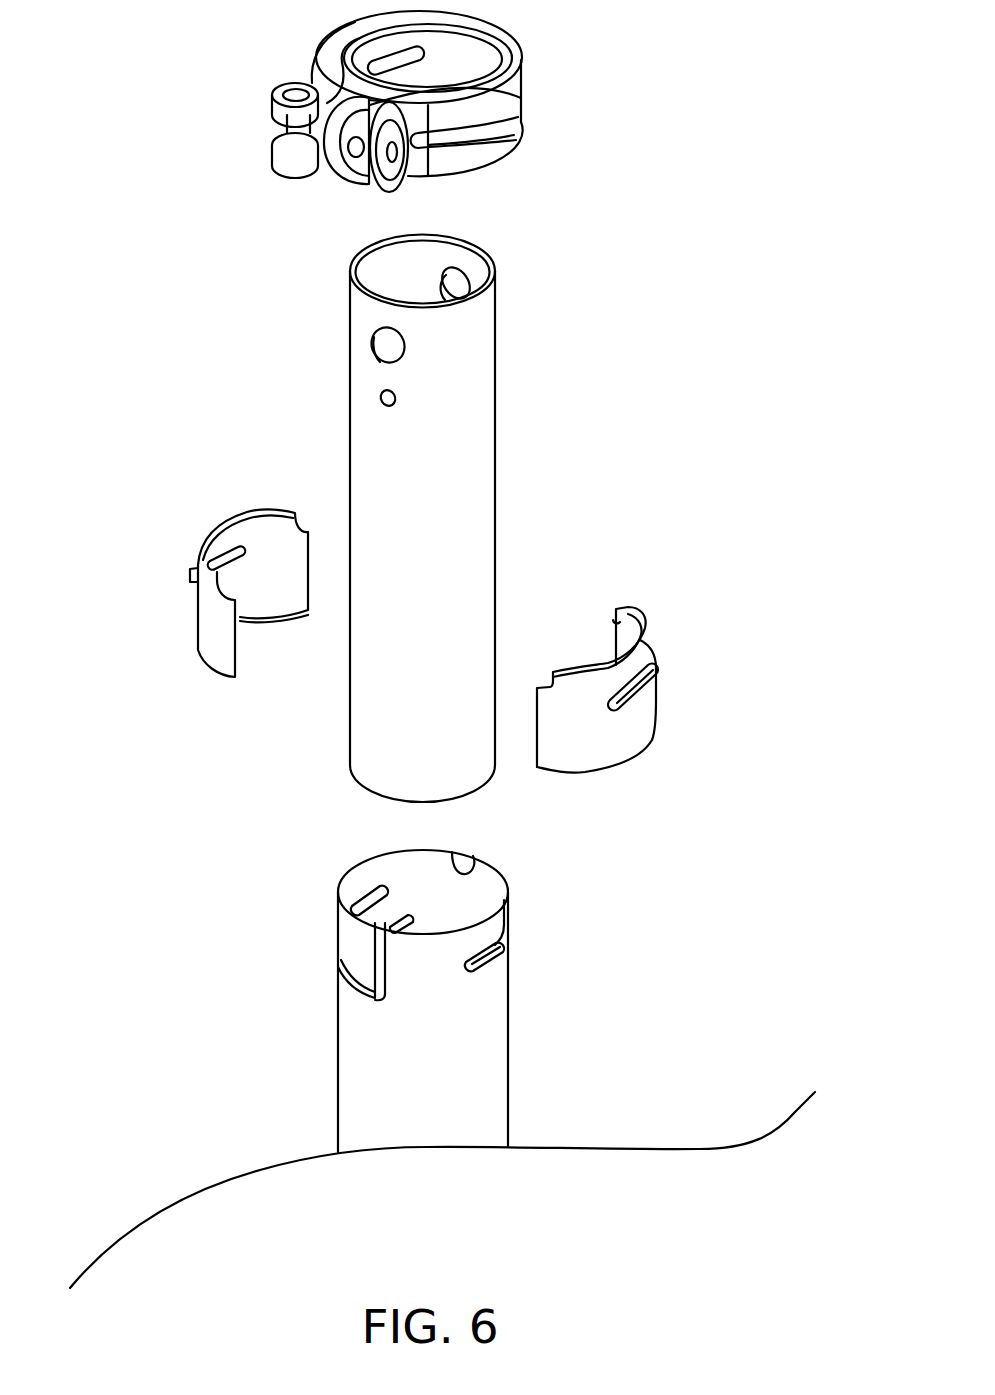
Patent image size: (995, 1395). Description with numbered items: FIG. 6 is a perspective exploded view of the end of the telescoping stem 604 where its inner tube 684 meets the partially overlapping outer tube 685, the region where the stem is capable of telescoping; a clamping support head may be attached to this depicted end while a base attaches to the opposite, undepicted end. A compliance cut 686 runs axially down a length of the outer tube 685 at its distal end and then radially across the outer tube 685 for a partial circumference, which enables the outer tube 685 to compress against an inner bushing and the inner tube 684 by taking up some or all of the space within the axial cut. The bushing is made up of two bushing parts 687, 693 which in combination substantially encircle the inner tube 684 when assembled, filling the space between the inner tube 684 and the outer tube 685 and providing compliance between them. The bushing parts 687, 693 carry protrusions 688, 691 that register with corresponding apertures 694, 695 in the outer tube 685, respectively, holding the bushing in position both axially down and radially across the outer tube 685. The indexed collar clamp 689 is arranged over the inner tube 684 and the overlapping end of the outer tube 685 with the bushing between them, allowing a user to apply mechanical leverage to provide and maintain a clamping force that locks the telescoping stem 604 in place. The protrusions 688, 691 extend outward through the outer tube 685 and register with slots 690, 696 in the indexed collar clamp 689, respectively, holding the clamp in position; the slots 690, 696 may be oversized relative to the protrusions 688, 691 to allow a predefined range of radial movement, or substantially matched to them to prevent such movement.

The telescoping stem 604 is at (755, 155).
The indexed collar clamp 689 is at (397, 155).
The slot 690 is at (405, 69).
The slot 696 is at (461, 141).
The inner tube 684 is at (445, 544).
The bushing part 687 is at (203, 593).
The protrusion 688 is at (188, 570).
The bushing part 693 is at (643, 704).
The protrusion 691 is at (630, 701).
The outer tube 685 is at (430, 980).
The aperture 694 is at (355, 890).
The aperture 695 is at (497, 954).
The compliance cut 686 is at (365, 996).